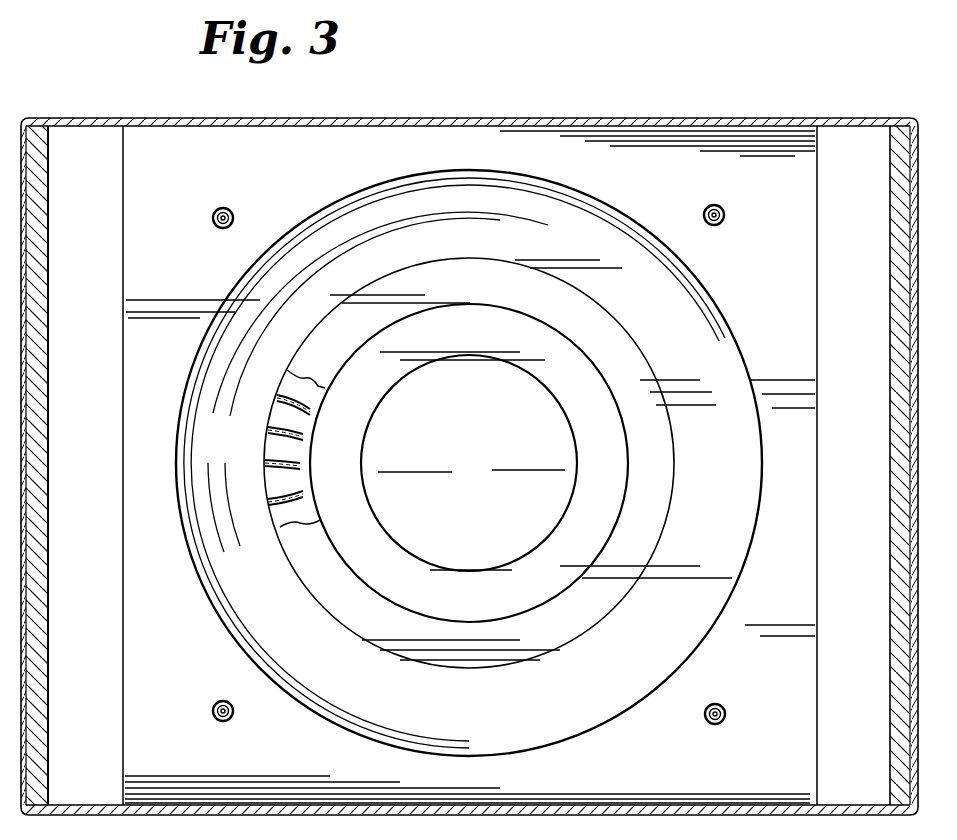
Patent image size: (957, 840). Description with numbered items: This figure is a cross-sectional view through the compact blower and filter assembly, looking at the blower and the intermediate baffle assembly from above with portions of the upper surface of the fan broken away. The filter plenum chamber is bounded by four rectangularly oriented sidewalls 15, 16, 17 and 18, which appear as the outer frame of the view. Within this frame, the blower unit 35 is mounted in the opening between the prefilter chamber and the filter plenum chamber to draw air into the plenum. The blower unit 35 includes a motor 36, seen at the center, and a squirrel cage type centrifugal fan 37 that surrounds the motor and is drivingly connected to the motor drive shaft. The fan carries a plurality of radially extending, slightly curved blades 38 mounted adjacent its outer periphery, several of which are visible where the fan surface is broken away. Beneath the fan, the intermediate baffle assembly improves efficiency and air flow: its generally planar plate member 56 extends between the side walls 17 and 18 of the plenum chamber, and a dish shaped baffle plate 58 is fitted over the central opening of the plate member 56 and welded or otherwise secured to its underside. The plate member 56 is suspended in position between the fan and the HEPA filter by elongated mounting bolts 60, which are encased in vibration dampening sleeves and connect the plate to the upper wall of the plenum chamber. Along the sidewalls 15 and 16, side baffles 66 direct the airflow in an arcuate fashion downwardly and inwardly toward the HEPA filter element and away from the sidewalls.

The sidewall 15 is at (26, 126).
The sidewall 16 is at (920, 128).
The sidewall 17 is at (484, 812).
The sidewall 18 is at (496, 120).
The blower unit 35 is at (481, 419).
The motor 36 is at (486, 452).
The squirrel cage type centrifugal fan 37 is at (292, 578).
The blades 38 is at (272, 460).
The plate member 56 is at (303, 140).
The dish shaped baffle plate 58 is at (724, 597).
The mounting bolts 60 is at (723, 208).
The side baffles 66 is at (47, 128).